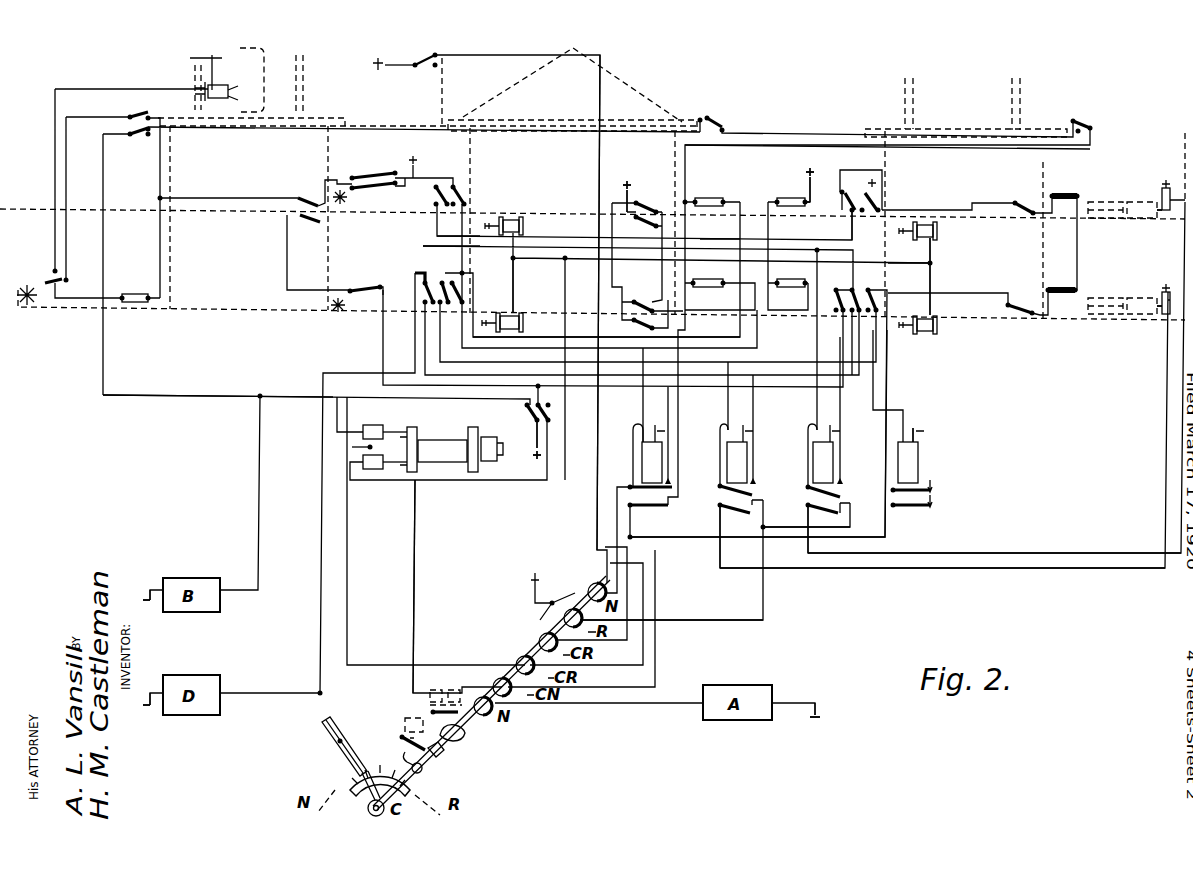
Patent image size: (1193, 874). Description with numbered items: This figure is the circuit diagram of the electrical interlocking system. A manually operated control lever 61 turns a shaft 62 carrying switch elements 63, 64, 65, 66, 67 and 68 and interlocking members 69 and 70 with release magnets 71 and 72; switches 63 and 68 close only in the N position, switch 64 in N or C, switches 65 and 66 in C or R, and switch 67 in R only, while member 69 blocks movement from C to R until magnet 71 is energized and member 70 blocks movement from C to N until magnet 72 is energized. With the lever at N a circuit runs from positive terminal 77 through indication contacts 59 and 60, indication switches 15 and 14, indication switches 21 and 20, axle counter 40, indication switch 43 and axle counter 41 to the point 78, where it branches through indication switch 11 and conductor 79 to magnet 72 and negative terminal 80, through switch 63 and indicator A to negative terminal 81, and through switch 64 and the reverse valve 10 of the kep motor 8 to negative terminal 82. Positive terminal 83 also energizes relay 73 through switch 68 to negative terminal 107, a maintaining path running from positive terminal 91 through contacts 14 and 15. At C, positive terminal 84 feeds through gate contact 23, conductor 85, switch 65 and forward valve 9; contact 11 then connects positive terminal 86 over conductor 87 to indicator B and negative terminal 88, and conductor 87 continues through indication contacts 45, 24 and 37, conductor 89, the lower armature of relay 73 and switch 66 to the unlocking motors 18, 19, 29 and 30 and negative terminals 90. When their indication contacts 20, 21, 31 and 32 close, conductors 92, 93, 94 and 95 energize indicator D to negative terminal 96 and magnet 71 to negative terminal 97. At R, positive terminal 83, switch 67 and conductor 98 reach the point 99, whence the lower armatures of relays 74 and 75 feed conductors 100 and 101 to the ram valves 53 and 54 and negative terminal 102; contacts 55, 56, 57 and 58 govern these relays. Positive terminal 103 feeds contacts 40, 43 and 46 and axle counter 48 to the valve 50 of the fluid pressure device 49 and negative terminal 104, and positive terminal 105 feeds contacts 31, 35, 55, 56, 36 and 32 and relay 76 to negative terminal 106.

The kep motor 8 is at (451, 449).
The forward actuating valve 9 is at (375, 468).
The reverse actuating valve 10 is at (375, 427).
The indication contacts 11 is at (519, 409).
The indication contact device 14 is at (637, 204).
The indication contact device 15 is at (644, 297).
The counter unlocking motor mechanism 18 is at (505, 220).
The counter unlocking motor mechanism 19 is at (520, 324).
The indication contacts 20 is at (466, 196).
The indication contacts 21 is at (440, 280).
The indication contact device 23 is at (416, 58).
The indication contact device 24 is at (717, 114).
The unlocking motor 29 is at (938, 232).
The unlocking motor 30 is at (925, 336).
The indication contacts 31 is at (860, 207).
The indication contacts 32 is at (826, 284).
The indication contact 35 is at (1022, 198).
The indication contact 36 is at (1019, 295).
The indication contact 37 is at (1087, 114).
The axle counter 40 is at (382, 172).
The axle counter 41 is at (357, 290).
The indication contacts 43 is at (313, 199).
The indication contact 45 is at (137, 112).
The indication contact 46 is at (135, 289).
The axle counter 48 is at (30, 285).
The fluid pressure device 49 is at (240, 50).
The electro-magnetically operated valve 50 is at (205, 82).
The electro-magnetically actuated valve 53 is at (1160, 195).
The electro-magnetically actuated valve 54 is at (1160, 302).
The indication contact 55 is at (1065, 186).
The indication contact 56 is at (1076, 283).
The indication contact 57 is at (712, 189).
The indication contact 58 is at (708, 275).
The indication contact 59 is at (789, 189).
The indication contact 60 is at (788, 275).
The control lever 61 is at (324, 724).
The shaft 62 is at (440, 753).
The switch element 63 is at (492, 706).
The switch element 64 is at (497, 680).
The switch element 65 is at (520, 660).
The switch element 66 is at (540, 632).
The switch element 67 is at (573, 608).
The switch element 68 is at (606, 582).
The interlocking member 69 is at (422, 772).
The interlocking member 70 is at (460, 737).
The release magnet 71 is at (400, 730).
The release magnet 72 is at (433, 690).
The relay 73 is at (655, 465).
The relay 74 is at (740, 465).
The relay 75 is at (828, 465).
The relay 76 is at (917, 465).
The positive terminal 77 is at (813, 177).
The point 78 is at (540, 388).
The conductor 79 is at (416, 552).
The negative terminal 80 is at (452, 690).
The negative terminal 81 is at (819, 724).
The negative terminal 82 is at (368, 447).
The positive terminal 83 is at (549, 587).
The positive terminal 84 is at (381, 74).
The conductor 85 is at (600, 108).
The positive terminal 86 is at (526, 446).
The conductor 87 is at (280, 396).
The negative terminal 88 is at (149, 613).
The conductor 89 is at (962, 148).
The negative terminals 90 is at (502, 262).
The positive terminal 91 is at (621, 188).
The conductor 92 is at (887, 380).
The conductor 93 is at (731, 241).
The conductor 94 is at (435, 234).
The conductor 95 is at (423, 337).
The negative terminal 96 is at (149, 714).
The negative terminal 97 is at (426, 713).
The conductor 98 is at (763, 617).
The point 99 is at (763, 527).
The conductor 100 is at (1048, 569).
The conductor 101 is at (1039, 551).
The negative terminal 102 is at (1173, 200).
The positive terminal 103 is at (425, 163).
The negative terminal 104 is at (212, 58).
The positive terminal 105 is at (856, 185).
The negative terminal 106 is at (935, 422).
The negative terminal 107 is at (640, 425).